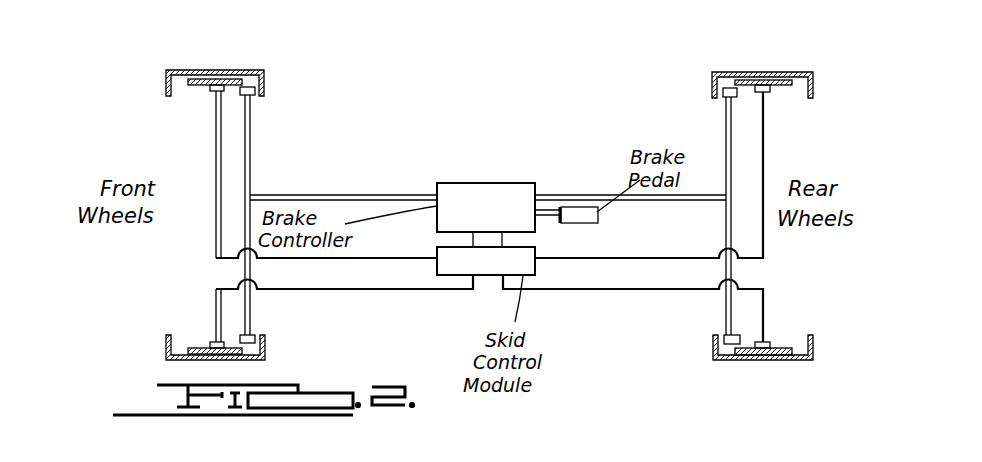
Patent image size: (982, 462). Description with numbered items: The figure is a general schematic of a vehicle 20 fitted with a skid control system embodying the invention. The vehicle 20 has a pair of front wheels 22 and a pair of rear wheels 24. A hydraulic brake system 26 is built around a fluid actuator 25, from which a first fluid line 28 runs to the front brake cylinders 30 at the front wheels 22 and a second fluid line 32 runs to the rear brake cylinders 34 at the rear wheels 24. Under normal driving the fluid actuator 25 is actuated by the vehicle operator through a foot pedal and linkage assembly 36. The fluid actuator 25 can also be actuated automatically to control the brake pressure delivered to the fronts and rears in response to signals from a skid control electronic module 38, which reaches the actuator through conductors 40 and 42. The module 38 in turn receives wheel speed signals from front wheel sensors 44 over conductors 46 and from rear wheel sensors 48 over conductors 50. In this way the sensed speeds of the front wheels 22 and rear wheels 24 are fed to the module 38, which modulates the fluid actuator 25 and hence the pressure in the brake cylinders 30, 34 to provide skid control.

The vehicle 20 is at (430, 120).
The front wheels 22 is at (166, 82).
The rear wheels 24 is at (813, 83).
The fluid actuator 25 is at (508, 183).
The hydraulic brake system 26 is at (464, 168).
The first fluid line 28 is at (316, 193).
The front brake cylinders 30 is at (263, 80).
The second fluid line 32 is at (580, 198).
The rear brake cylinders 34 is at (723, 93).
The foot pedal and linkage assembly 36 is at (568, 222).
The skid control electronic module 38 is at (488, 277).
The conductor 40 is at (473, 240).
The conductor 42 is at (503, 240).
The front wheel sensors 44 is at (208, 90).
The conductors 46 is at (219, 252).
The rear wheel sensors 48 is at (770, 92).
The conductors 50 is at (604, 261).